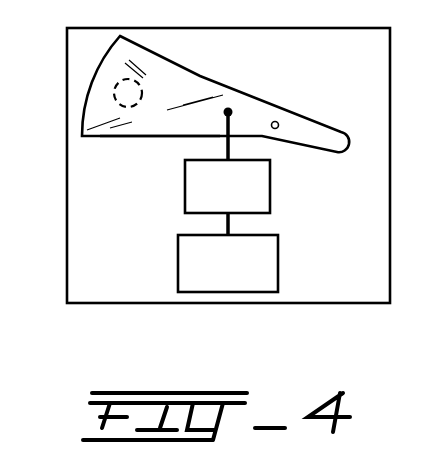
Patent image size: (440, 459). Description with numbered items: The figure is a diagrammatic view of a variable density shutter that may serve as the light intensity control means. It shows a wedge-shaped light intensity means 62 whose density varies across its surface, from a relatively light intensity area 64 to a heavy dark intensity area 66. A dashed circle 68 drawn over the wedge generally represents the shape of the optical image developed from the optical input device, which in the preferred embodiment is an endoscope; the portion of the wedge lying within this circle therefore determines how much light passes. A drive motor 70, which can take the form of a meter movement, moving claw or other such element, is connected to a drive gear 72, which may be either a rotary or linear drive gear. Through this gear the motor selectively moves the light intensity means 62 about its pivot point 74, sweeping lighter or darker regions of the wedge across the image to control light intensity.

The wedge-shaped light intensity means 62 is at (197, 78).
The relatively light intensity area 64 is at (166, 132).
The heavy dark intensity area 66 is at (138, 78).
The dashed circle 68 is at (116, 91).
The drive motor 70 is at (270, 262).
The drive gear 72 is at (263, 198).
The pivot point 74 is at (278, 121).